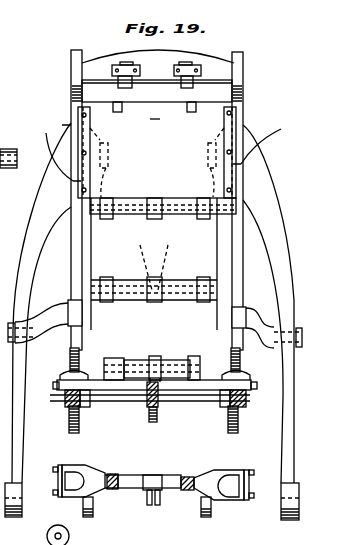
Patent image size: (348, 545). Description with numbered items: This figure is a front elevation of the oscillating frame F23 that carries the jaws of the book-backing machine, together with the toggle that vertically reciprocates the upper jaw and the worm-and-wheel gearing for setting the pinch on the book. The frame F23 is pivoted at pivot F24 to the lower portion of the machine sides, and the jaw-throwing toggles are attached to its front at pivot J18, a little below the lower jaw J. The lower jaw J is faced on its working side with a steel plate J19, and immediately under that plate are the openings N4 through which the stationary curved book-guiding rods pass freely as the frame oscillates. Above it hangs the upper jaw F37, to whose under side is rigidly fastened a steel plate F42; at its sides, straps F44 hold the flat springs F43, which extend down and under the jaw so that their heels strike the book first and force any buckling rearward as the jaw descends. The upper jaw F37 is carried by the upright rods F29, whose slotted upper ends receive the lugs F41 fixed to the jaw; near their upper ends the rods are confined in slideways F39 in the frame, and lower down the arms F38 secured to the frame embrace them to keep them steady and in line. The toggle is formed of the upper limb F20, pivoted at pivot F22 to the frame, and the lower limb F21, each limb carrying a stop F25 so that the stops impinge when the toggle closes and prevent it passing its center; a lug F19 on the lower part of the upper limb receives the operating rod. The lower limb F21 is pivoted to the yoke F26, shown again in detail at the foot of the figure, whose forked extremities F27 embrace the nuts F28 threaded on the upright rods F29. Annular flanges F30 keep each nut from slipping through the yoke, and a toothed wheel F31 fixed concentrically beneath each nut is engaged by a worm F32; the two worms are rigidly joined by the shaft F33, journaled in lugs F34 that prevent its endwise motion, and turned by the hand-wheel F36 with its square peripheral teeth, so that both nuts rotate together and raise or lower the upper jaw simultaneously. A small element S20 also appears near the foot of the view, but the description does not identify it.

The upper jaw F37 is at (158, 59).
The lug F41 is at (71, 70).
The steel plate F42 is at (72, 88).
The steel plate J19 is at (137, 102).
The lower jaw J is at (155, 113).
The strap F44 is at (158, 70).
The flat spring F43 is at (119, 87).
The opening N4 is at (153, 115).
The pivot J18 is at (157, 152).
The slideway F39 is at (162, 149).
The oscillating frame F23 is at (153, 303).
The upright rod F29 is at (71, 237).
The pivot F22 is at (163, 200).
The upper plate or limb of toggle F20 is at (154, 264).
The stop F25 is at (155, 259).
The lug F19 is at (154, 263).
The lower link or limb of toggle F21 is at (152, 352).
The arm F38 is at (48, 320).
The annular flange F30 is at (86, 372).
The nut F28 is at (62, 374).
The yoke or piece F26 is at (154, 435).
The shaft F33 is at (186, 401).
The toothed wheel F31 is at (64, 404).
The worm F32 is at (65, 407).
The lug F34 is at (86, 407).
The hand-wheel F36 is at (151, 422).
The eye or forked extremity F27 is at (72, 480).
The pivot F24 is at (24, 500).
The pivot S20 is at (70, 537).